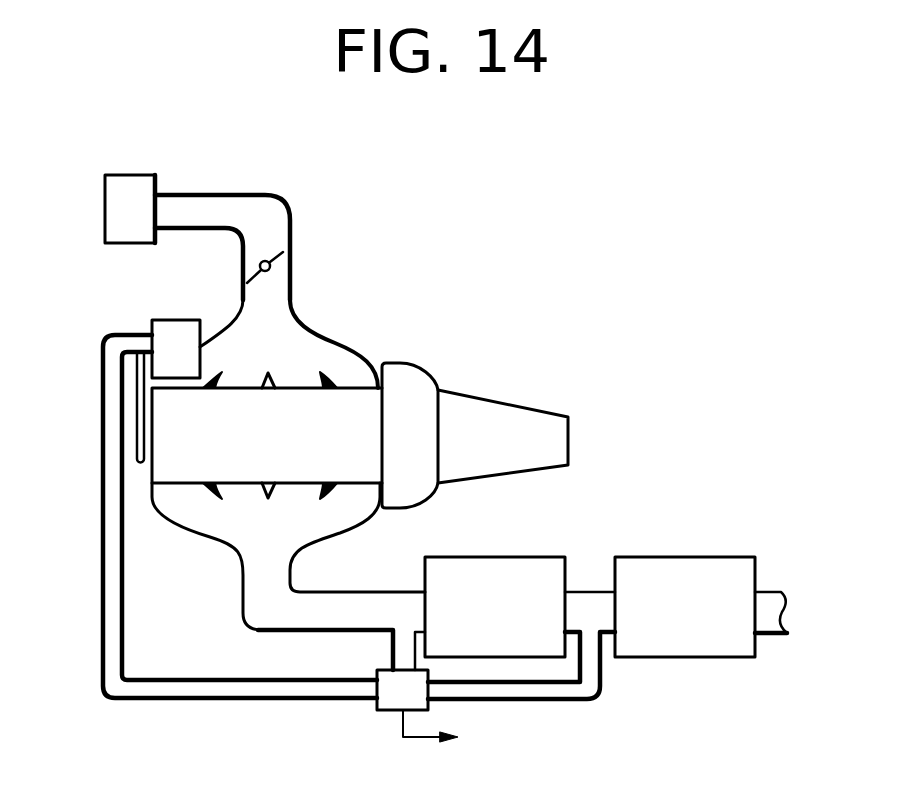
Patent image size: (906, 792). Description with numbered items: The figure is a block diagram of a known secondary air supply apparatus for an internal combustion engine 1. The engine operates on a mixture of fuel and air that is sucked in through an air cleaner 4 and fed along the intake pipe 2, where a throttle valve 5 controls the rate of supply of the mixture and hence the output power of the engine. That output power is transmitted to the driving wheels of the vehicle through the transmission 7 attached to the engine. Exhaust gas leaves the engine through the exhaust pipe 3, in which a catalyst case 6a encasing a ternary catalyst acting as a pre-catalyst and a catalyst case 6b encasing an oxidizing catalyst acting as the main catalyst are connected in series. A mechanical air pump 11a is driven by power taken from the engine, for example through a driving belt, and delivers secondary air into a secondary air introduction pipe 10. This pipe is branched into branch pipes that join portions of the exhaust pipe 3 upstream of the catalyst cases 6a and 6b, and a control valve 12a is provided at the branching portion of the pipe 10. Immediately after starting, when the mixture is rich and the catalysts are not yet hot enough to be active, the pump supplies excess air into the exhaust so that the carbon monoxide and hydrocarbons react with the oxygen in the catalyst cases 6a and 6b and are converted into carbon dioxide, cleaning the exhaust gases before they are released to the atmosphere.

The internal combustion engine 1 is at (355, 403).
The intake pipe 2 is at (313, 353).
The exhaust pipe 3 is at (253, 568).
The air cleaner 4 is at (140, 183).
The throttle valve 5 is at (274, 258).
The catalyst case 6a is at (484, 560).
The catalyst case 6b is at (653, 560).
The transmission 7 is at (512, 413).
The secondary air introduction pipe 10 is at (267, 688).
The air pump 11a is at (186, 327).
The control valve 12a is at (393, 696).